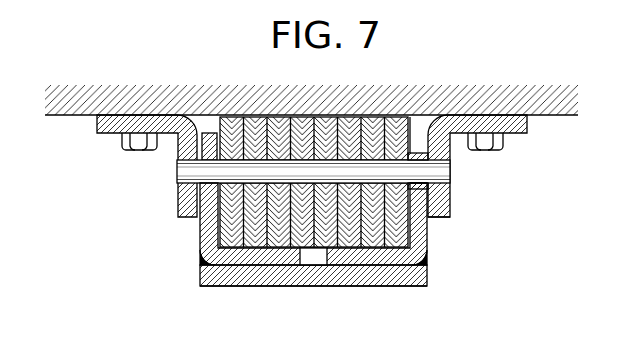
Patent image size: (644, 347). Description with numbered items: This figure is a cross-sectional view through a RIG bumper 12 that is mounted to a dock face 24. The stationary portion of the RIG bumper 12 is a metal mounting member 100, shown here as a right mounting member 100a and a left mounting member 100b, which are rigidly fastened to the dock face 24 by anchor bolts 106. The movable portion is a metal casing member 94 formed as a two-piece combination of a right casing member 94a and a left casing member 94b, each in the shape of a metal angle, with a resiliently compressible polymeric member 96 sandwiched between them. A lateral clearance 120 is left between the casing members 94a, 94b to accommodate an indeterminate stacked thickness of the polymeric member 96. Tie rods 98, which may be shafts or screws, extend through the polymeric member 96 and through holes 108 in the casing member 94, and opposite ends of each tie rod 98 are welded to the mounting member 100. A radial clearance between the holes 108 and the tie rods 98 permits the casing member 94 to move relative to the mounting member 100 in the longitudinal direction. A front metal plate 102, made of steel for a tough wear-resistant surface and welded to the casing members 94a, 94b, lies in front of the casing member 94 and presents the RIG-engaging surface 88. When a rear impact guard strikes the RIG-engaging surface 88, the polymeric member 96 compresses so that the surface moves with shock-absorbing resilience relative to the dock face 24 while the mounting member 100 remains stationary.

The RIG bumper 12 is at (495, 181).
The dock face 24 is at (65, 116).
The RIG-engaging surface 88 is at (248, 287).
The metal casing member 94 is at (200, 248).
The right casing member 94a is at (428, 246).
The left casing member 94b is at (205, 266).
The polymeric member 96 is at (254, 116).
The tie rods 98 is at (177, 171).
The metal mounting member 100 is at (516, 134).
The right mounting member 100a is at (450, 197).
The left mounting member 100b is at (181, 218).
The front metal plate 102 is at (398, 287).
The anchor bolts 106 is at (137, 151).
The holes 108 is at (421, 152).
The lateral clearance 120 is at (313, 258).